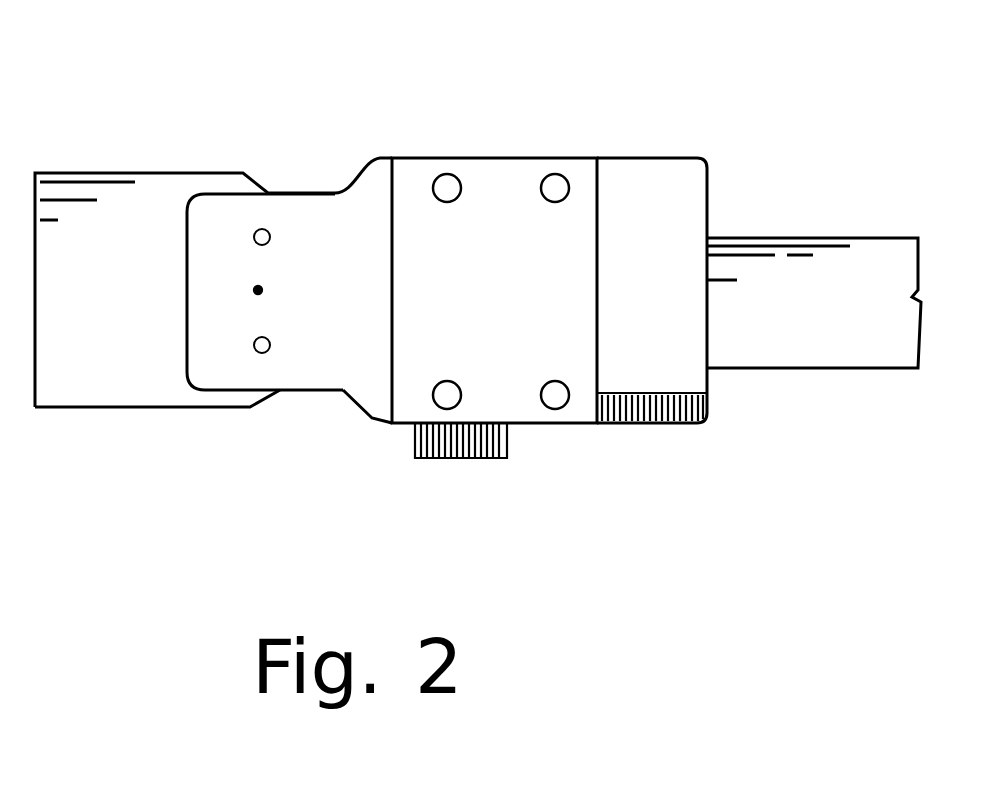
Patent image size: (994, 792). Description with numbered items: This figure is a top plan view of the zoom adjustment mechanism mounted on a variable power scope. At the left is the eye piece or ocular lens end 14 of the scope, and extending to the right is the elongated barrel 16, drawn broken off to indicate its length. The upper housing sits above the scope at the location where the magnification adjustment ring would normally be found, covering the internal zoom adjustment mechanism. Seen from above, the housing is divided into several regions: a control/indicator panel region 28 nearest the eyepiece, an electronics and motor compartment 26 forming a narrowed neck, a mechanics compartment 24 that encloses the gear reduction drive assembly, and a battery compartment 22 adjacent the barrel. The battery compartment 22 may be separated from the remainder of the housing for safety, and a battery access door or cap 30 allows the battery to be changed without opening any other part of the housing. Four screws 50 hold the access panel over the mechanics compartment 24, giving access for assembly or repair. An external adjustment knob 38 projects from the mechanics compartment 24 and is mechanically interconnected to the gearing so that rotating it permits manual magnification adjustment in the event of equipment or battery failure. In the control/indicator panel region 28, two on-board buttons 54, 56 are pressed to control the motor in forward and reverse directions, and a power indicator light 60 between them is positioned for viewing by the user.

The eye piece or ocular lens end 14 is at (98, 373).
The elongated barrel 16 is at (800, 325).
The battery compartment 22 is at (662, 208).
The mechanics compartment 24 is at (567, 423).
The electronics and motor compartment 26 is at (345, 405).
The control/indicator panel region 28 is at (240, 368).
The battery access door or cap 30 is at (653, 423).
The external adjustment knob 38 is at (463, 458).
The screws 50 is at (553, 176).
The on-board button 54 is at (265, 353).
The on-board button 56 is at (264, 233).
The power indicator light 60 is at (258, 290).